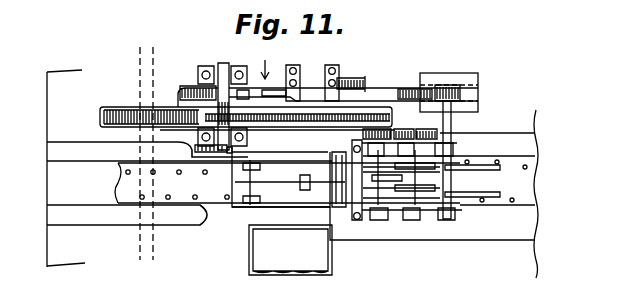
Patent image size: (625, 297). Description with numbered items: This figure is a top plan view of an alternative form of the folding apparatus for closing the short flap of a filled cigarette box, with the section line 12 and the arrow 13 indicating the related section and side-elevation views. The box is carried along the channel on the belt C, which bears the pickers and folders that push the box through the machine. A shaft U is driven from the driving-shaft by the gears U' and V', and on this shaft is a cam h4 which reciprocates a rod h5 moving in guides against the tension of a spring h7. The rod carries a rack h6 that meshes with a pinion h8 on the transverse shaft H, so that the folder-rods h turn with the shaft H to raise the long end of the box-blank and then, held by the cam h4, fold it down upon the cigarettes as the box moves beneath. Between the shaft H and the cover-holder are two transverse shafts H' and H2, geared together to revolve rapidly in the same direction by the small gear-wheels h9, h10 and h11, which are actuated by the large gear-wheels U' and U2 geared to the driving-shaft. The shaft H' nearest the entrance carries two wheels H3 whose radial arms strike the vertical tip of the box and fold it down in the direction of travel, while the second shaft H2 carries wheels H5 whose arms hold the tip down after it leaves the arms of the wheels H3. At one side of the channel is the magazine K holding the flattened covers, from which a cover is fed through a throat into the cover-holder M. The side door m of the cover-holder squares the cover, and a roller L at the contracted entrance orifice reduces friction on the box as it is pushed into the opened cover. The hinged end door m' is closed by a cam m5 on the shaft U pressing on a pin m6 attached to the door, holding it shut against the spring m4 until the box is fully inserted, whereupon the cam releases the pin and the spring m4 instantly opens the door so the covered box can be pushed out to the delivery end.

The section line 12 12 is at (100, 187).
The arrow 13 is at (265, 62).
The belt C is at (496, 181).
The folder-rods h is at (492, 176).
The gear V' is at (246, 100).
The large gear-wheel U' is at (273, 96).
The shaft U is at (222, 94).
The cam h4 is at (192, 86).
The large gear-wheel U2 is at (318, 112).
The spring h7 is at (352, 78).
The rod h5 is at (404, 89).
The rack h6 is at (428, 85).
The pinion h8 is at (452, 85).
The shaft H is at (456, 160).
The small gear-wheel h9 is at (385, 130).
The small gear-wheel h10 is at (406, 131).
The small gear-wheel h11 is at (434, 128).
The folder wheel H3 is at (418, 200).
The shaft H2 is at (388, 196).
The shaft H' is at (417, 224).
The wheel H5 is at (388, 222).
The cam m5 is at (197, 147).
The pin m6 is at (232, 150).
The cover-holder M is at (310, 188).
The spring m4 is at (300, 184).
The hinged door m' is at (248, 183).
The door m is at (281, 215).
The roller L is at (339, 191).
The magazine K is at (290, 250).